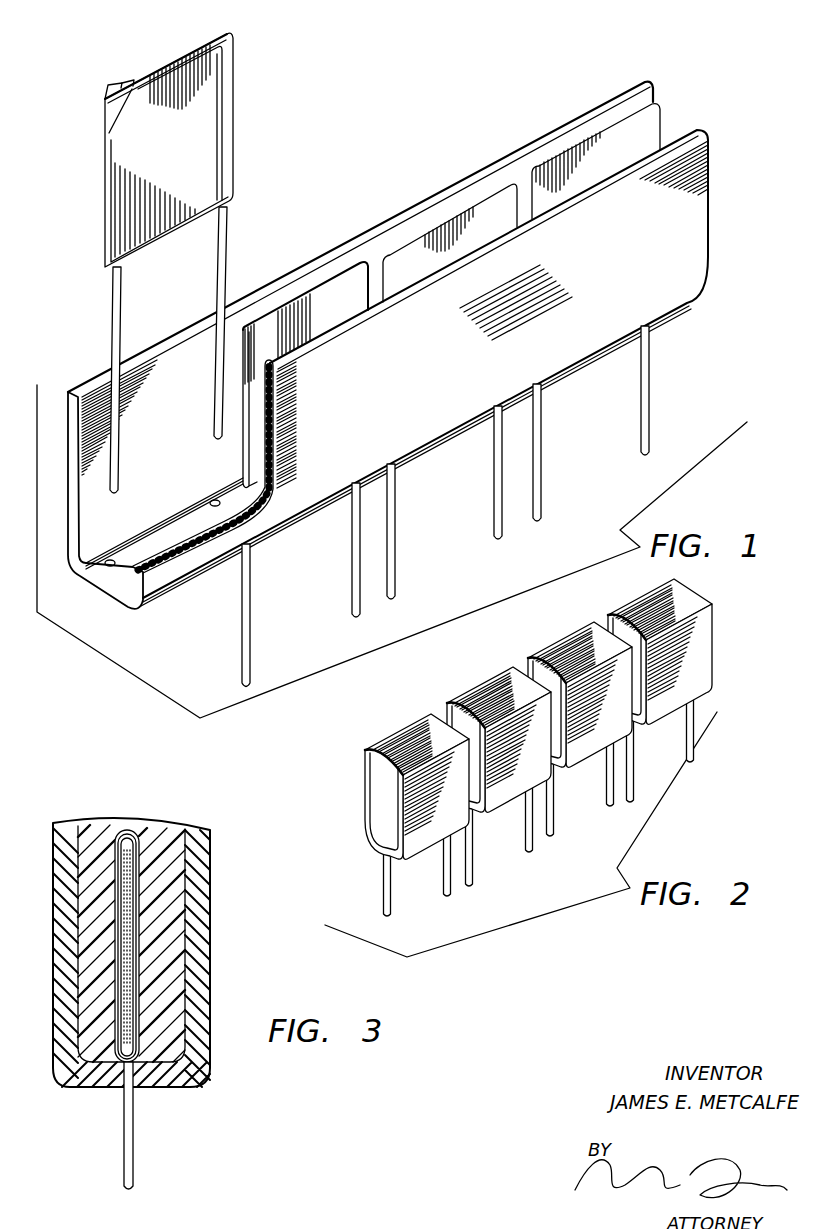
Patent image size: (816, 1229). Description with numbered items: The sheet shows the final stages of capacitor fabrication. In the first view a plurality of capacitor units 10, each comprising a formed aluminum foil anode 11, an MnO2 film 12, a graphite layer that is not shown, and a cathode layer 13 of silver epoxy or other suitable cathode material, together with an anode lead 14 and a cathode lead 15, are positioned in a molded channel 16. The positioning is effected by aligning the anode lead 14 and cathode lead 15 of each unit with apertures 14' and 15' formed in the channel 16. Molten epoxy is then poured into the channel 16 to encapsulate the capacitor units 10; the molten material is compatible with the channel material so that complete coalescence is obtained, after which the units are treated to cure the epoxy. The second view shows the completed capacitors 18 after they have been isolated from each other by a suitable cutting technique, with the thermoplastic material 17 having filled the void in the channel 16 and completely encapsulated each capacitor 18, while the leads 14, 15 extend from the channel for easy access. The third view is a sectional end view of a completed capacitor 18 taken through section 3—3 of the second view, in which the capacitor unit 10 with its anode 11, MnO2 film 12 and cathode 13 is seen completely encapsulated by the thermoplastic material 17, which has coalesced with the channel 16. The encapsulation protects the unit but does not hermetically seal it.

In FIG. 2, the section 3— 3 is at (390, 733).
In FIG. 1, the capacitor unit 10 is at (244, 93).
In FIG. 3, the capacitor unit 10 is at (113, 913).
In FIG. 1, the formed aluminum foil anode 11 is at (110, 108).
In FIG. 3, the formed aluminum foil anode 11 is at (135, 845).
In FIG. 1, the MnO2 film 12 is at (131, 88).
In FIG. 3, the MnO2 film 12 is at (124, 838).
In FIG. 1, the cathode layer 13 is at (230, 53).
In FIG. 3, the cathode layer 13 is at (112, 845).
In FIG. 1, the anode lead 14 is at (241, 323).
In FIG. 2, the anode lead 14 is at (533, 821).
In FIG. 1, the aperture 14' is at (225, 550).
In FIG. 1, the cathode lead 15 is at (98, 380).
In FIG. 2, the cathode lead 15 is at (466, 830).
In FIG. 3, the cathode lead 15 is at (149, 1125).
In FIG. 1, the aperture 15' is at (80, 582).
In FIG. 1, the molded channel 16 is at (177, 575).
In FIG. 2, the molded channel 16 is at (367, 822).
In FIG. 3, the molded channel 16 is at (193, 872).
In FIG. 2, the thermoplastic material 17 is at (378, 786).
In FIG. 3, the thermoplastic material 17 is at (178, 840).
In FIG. 2, the completed capacitor 18 is at (494, 669).